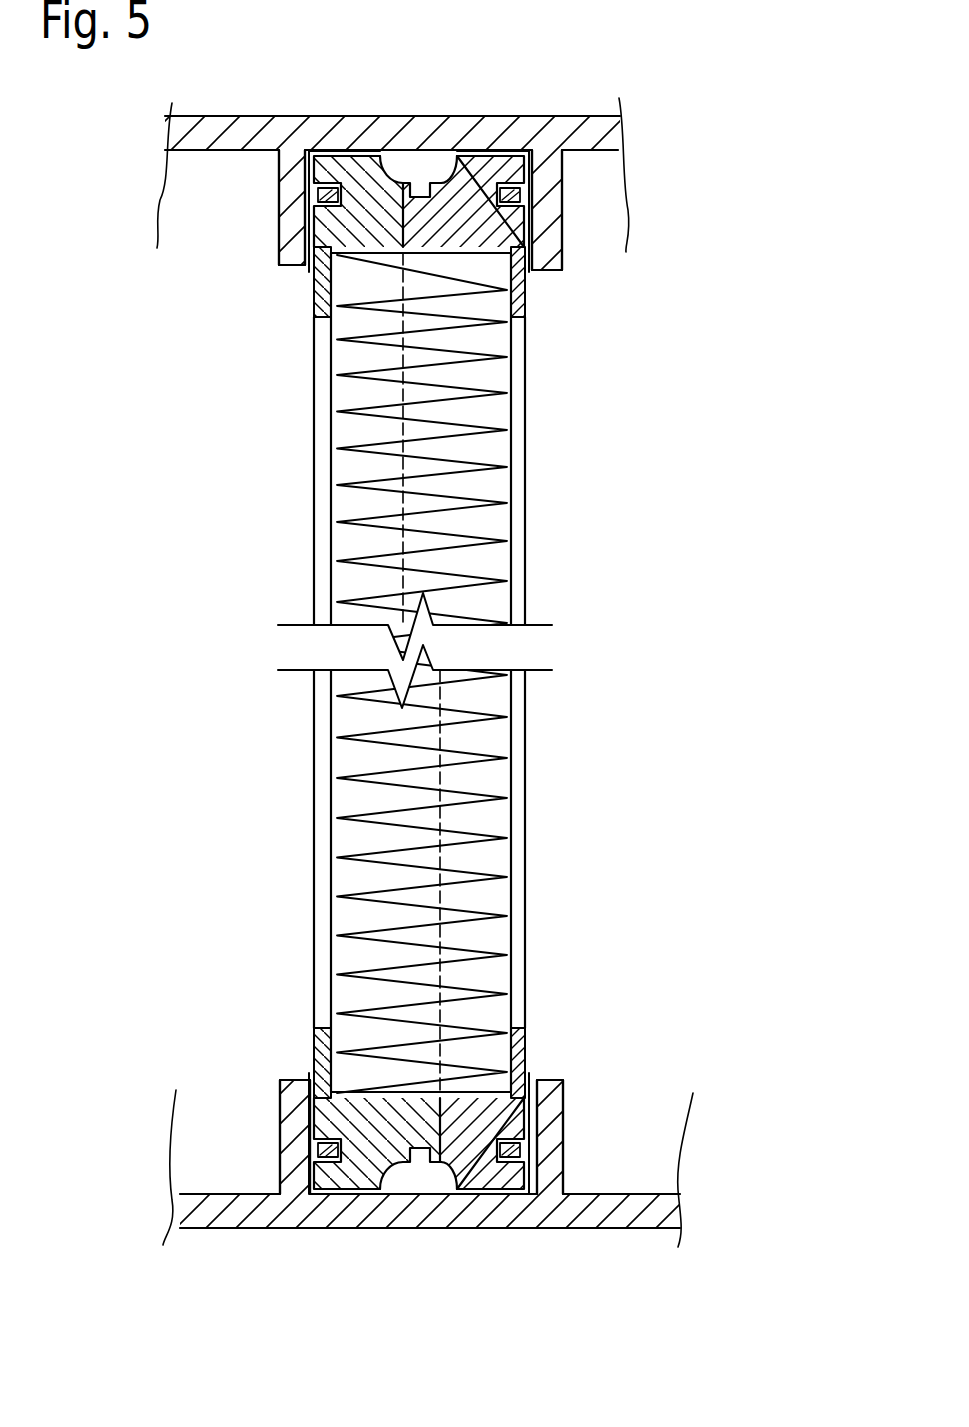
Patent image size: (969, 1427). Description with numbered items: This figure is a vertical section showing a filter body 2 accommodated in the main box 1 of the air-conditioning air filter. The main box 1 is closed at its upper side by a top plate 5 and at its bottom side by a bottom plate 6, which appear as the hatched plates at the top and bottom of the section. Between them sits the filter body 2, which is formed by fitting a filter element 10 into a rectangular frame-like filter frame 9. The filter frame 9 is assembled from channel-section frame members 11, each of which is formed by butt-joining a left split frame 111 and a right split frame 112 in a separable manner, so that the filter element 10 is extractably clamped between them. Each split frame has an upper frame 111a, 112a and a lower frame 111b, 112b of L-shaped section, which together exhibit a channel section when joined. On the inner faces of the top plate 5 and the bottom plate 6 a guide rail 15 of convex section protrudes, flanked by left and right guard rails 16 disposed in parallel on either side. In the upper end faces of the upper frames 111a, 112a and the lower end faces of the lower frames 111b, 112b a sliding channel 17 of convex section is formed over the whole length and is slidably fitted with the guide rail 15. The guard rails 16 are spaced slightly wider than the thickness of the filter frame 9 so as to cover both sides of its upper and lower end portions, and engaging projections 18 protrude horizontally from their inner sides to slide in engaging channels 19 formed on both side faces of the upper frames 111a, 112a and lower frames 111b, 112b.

The main box 1 is at (601, 101).
The filter body 2 is at (537, 428).
The top plate 5 is at (206, 119).
The bottom plate 6 is at (198, 1220).
The filter frame 9 is at (305, 543).
The filter element 10 is at (470, 498).
The channel-section frame member 11 is at (306, 460).
The guide rail 15 is at (347, 218).
The guard rail 16 is at (288, 262).
The sliding channel 17 is at (443, 168).
The engaging projection 18 is at (350, 197).
The engaging channel 19 is at (337, 198).
The left split frame 111 is at (316, 302).
The right split frame 112 is at (522, 302).
The upper frame 111a is at (333, 163).
The upper frame 112a is at (503, 163).
The lower frame 111b is at (357, 1172).
The lower frame 112b is at (484, 1183).